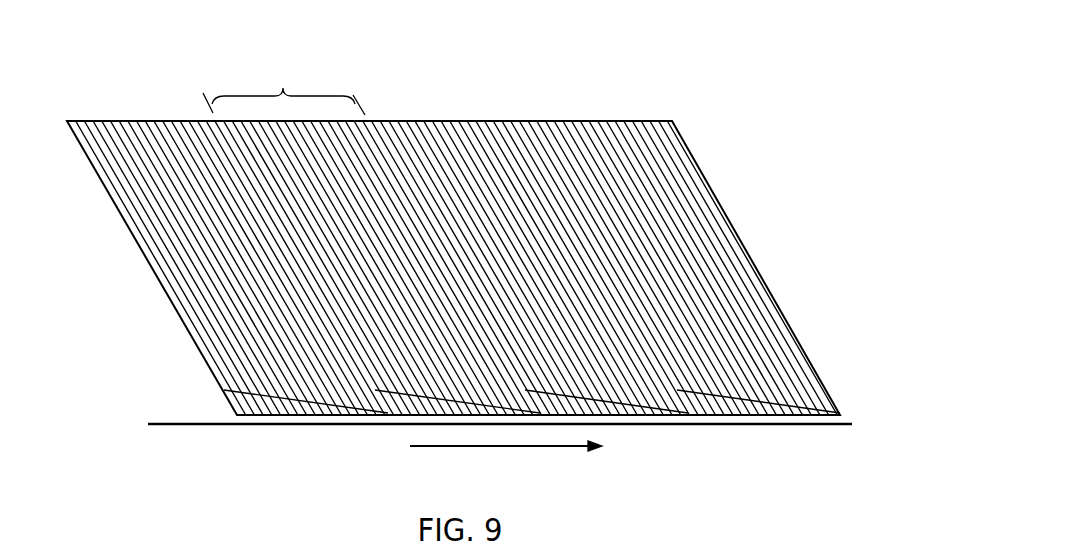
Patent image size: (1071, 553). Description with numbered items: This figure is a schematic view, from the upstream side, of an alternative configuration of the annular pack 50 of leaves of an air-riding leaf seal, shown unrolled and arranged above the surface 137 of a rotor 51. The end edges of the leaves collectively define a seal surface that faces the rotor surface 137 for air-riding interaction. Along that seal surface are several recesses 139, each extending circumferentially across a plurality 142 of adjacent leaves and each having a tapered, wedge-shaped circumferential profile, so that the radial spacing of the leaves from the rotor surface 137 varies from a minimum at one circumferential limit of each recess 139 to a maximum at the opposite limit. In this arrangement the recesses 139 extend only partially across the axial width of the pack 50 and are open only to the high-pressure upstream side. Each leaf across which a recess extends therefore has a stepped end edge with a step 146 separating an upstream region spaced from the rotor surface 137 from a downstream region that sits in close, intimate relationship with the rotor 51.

The annular pack of leaves 50 is at (712, 180).
The plurality of adjacent leaves 142 is at (284, 87).
The rotor surface 137 is at (158, 420).
The rotor 51 is at (197, 445).
The recess 139 is at (402, 402).
The step 146 is at (733, 398).